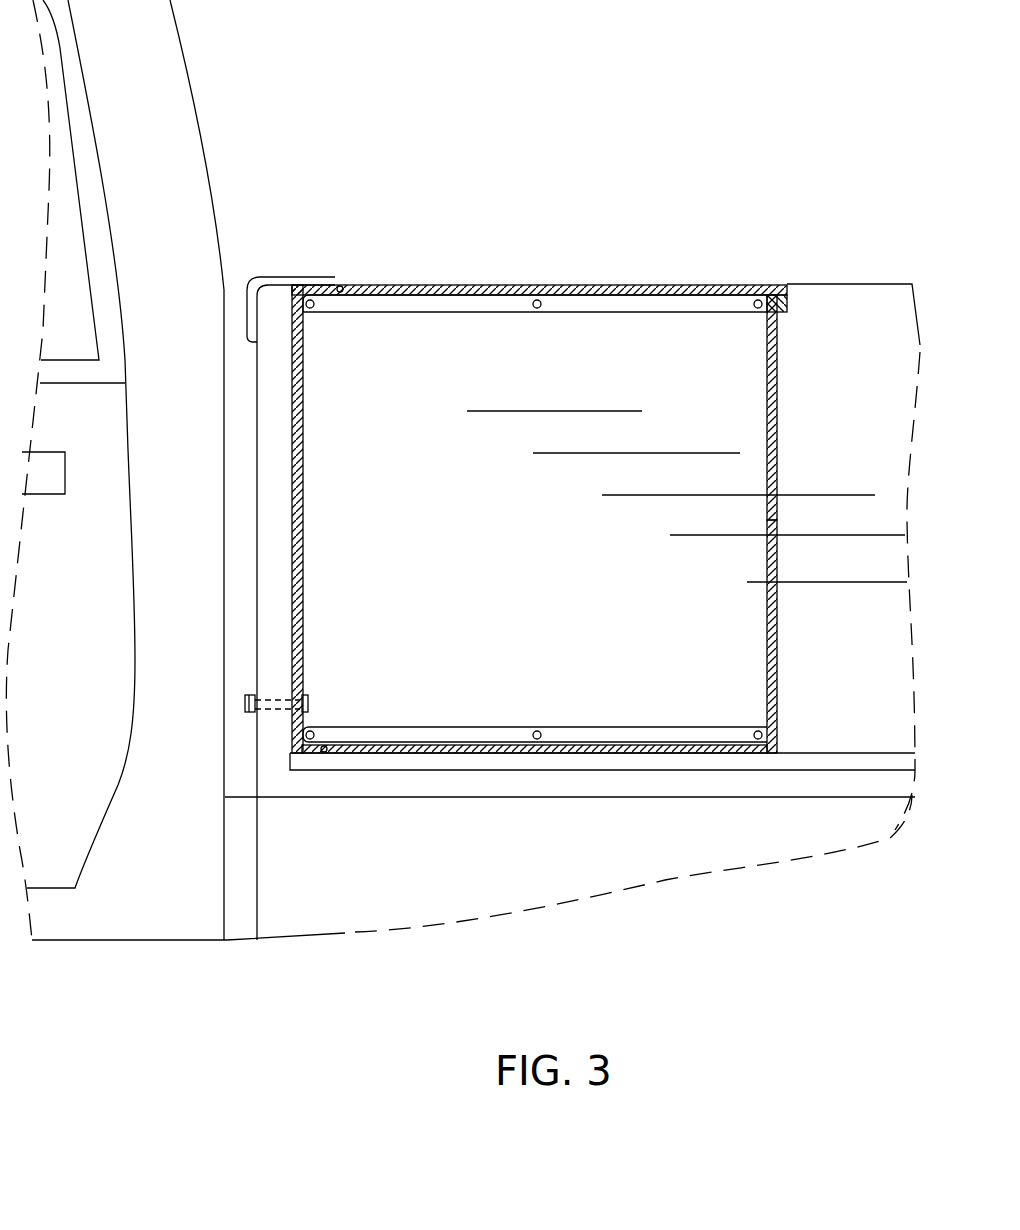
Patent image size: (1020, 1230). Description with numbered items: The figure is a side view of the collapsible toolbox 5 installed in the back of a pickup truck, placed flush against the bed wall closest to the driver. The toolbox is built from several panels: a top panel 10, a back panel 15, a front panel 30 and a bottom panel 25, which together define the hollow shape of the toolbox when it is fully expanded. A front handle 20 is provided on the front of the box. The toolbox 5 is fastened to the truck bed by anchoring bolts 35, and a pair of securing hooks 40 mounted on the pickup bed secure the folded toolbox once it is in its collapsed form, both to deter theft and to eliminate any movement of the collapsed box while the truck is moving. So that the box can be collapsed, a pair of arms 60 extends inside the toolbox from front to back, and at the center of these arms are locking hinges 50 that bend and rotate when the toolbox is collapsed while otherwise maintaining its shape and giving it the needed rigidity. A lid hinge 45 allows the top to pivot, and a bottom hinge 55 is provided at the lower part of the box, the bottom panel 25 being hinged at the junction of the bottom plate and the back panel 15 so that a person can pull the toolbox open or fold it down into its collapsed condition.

The collapsible toolbox 5 is at (550, 145).
The top panel 10 is at (722, 284).
The back panel 15 is at (305, 408).
The front handle 20 is at (772, 330).
The bottom panel 25 is at (712, 753).
The front panel 30 is at (773, 693).
The anchoring bolts 35 is at (309, 700).
The securing hook 40 is at (262, 277).
The lid hinge 45 is at (342, 286).
The locking hinge 50 is at (537, 308).
The bottom hinge 55 is at (325, 752).
The arms 60 is at (506, 302).